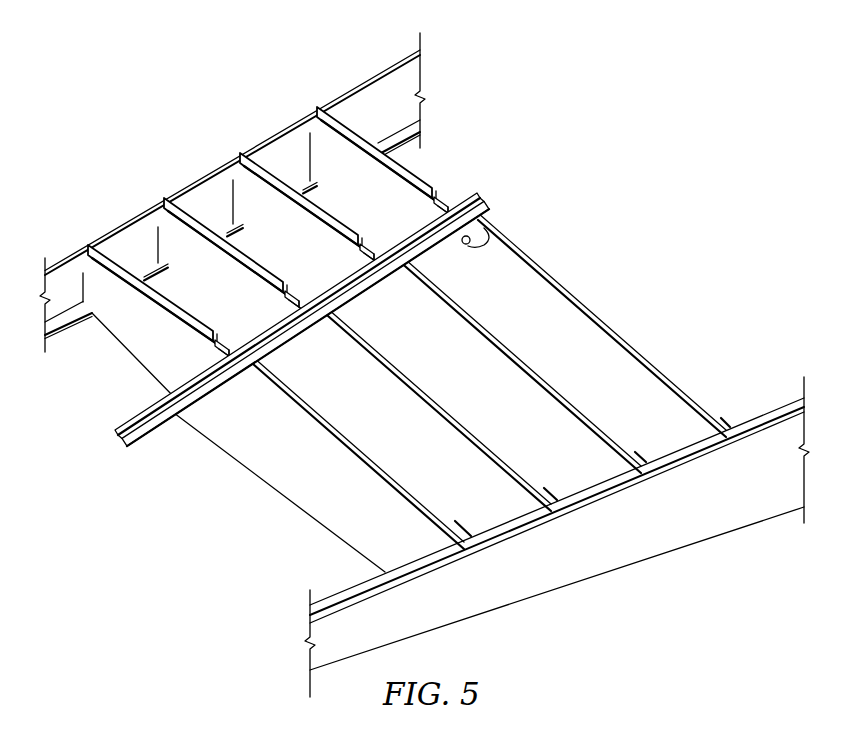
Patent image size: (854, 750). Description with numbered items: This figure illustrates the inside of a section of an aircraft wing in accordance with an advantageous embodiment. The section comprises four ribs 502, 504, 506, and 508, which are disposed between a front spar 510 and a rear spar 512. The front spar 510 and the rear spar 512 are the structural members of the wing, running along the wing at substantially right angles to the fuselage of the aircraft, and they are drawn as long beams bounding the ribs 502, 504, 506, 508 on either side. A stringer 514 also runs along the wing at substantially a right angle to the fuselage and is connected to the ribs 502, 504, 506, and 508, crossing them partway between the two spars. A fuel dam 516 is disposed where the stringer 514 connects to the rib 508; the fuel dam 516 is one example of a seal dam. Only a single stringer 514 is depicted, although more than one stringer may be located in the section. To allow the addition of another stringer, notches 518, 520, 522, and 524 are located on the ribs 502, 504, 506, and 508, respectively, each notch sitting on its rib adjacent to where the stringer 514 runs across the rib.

The rib 502 is at (95, 283).
The rib 504 is at (173, 236).
The rib 506 is at (248, 192).
The rib 508 is at (325, 146).
The front spar 510 is at (378, 72).
The rear spar 512 is at (765, 414).
The stringer 514 is at (143, 413).
The fuel dam 516 is at (492, 229).
The notch 518 is at (210, 341).
The notch 520 is at (285, 292).
The notch 522 is at (359, 245).
The notch 524 is at (433, 198).